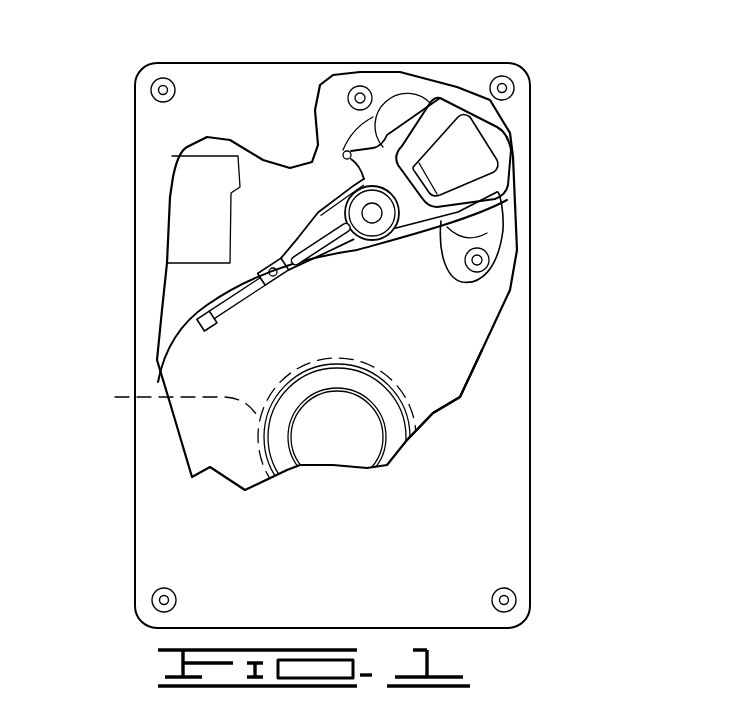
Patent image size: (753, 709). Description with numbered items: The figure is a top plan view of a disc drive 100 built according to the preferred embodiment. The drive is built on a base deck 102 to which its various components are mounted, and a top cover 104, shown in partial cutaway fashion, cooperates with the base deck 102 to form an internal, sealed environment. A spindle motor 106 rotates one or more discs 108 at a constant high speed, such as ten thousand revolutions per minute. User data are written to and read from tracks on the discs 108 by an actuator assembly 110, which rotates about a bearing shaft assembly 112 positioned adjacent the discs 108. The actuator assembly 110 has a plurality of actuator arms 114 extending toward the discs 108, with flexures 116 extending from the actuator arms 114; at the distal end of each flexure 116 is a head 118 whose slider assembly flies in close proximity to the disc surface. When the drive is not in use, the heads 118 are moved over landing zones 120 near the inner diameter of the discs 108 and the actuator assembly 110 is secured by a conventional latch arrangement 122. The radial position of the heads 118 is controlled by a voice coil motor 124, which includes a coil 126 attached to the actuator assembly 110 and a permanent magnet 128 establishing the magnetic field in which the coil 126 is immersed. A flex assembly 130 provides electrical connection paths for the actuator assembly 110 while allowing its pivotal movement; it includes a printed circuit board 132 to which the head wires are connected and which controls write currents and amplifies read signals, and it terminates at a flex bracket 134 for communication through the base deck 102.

The disc drive 100 is at (177, 51).
The base deck 102 is at (174, 294).
The top cover 104 is at (174, 494).
The spindle motor 106 is at (340, 438).
The disc 108 is at (448, 367).
The actuator assembly 110 is at (357, 250).
The bearing shaft assembly 112 is at (373, 213).
The actuator arm 114 is at (303, 277).
The flexure 116 is at (240, 300).
The head 118 is at (197, 331).
The landing zone 120 is at (246, 437).
The latch arrangement 122 is at (343, 153).
The voice coil motor 124 is at (405, 98).
The coil 126 is at (497, 150).
The permanent magnet 128 is at (383, 72).
The flex assembly 130 is at (313, 207).
The printed circuit board 132 is at (340, 190).
The flex bracket 134 is at (188, 217).